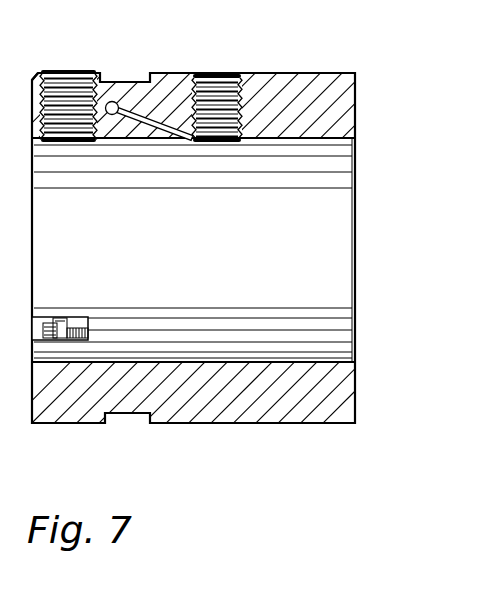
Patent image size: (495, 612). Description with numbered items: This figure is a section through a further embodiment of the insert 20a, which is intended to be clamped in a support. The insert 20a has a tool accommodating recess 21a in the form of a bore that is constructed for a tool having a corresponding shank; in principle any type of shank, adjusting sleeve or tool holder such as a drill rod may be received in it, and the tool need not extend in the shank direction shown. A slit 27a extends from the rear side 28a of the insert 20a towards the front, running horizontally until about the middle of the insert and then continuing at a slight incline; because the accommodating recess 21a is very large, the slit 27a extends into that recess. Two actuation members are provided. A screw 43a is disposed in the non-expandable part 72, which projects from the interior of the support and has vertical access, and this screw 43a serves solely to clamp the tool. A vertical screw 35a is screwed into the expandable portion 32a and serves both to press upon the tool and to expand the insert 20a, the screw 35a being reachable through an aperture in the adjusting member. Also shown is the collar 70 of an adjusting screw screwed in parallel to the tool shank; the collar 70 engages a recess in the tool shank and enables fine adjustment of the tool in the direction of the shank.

The insert 20a is at (349, 69).
The tool accommodating recess 21a is at (287, 367).
The slit 27a is at (267, 137).
The rear side 28a is at (355, 192).
The expandable portion 32a is at (298, 98).
The vertical screw 35a is at (220, 107).
The screw 43a is at (73, 88).
The collar 70 is at (112, 176).
The non-expandable part 72 is at (37, 46).